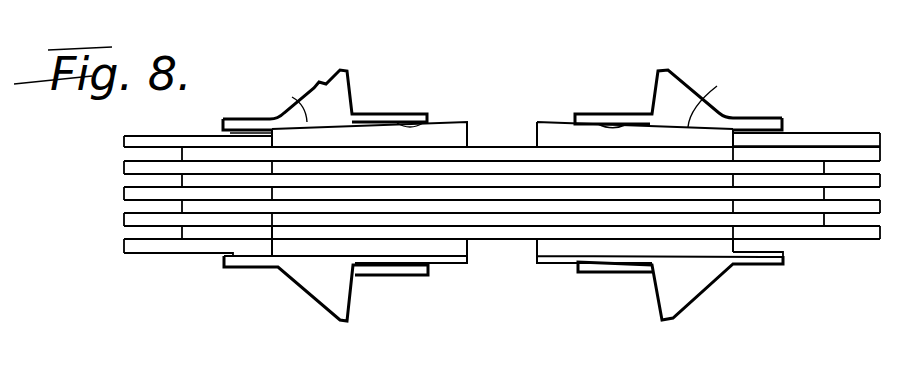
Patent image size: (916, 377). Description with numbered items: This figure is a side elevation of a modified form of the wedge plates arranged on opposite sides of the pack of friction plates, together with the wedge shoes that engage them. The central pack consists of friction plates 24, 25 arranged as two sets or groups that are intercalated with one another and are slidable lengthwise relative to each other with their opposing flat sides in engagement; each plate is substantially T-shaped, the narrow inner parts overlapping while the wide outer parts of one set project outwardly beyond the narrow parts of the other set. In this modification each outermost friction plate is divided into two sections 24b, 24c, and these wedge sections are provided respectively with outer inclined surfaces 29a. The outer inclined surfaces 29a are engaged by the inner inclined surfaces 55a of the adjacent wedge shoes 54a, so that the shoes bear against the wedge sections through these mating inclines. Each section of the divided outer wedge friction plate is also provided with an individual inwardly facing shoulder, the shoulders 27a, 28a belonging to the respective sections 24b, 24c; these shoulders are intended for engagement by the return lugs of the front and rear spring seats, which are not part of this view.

The friction plates 24 is at (125, 242).
The friction plates 25 is at (882, 226).
The wedge section 24b is at (452, 133).
The wedge section 24c is at (553, 130).
The inwardly facing shoulder 27a is at (233, 136).
The inwardly facing shoulder 28a is at (735, 141).
The outer inclined surface 29a is at (603, 124).
The wedge shoe 54a is at (702, 303).
The inner inclined surface 55a is at (502, 96).